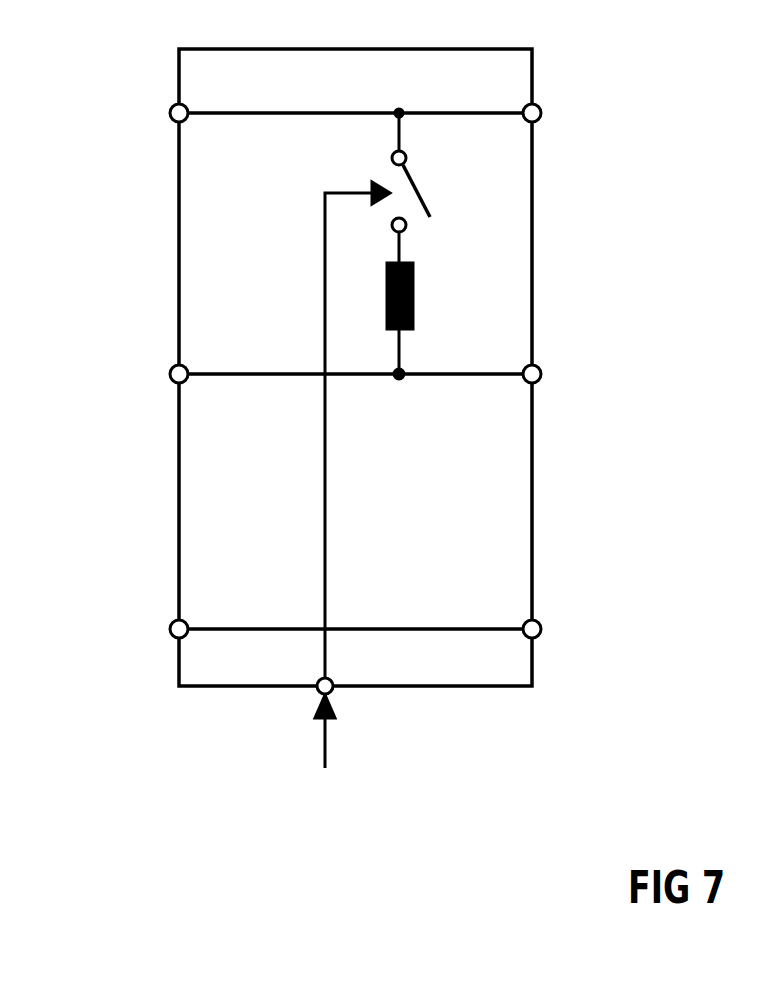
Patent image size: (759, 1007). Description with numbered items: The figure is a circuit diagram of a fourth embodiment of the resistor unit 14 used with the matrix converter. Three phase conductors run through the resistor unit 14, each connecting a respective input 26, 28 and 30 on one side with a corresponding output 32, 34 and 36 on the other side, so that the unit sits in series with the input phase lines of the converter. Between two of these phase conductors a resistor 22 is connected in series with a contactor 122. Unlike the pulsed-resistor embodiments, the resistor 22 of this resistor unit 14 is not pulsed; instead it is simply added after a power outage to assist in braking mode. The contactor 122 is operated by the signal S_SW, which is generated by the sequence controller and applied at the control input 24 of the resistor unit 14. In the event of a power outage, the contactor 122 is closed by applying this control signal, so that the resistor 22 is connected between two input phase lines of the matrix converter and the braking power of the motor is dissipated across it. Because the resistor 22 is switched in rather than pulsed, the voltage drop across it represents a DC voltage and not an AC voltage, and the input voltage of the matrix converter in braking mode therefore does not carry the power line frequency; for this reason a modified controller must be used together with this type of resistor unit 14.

The resistor unit 14 is at (533, 513).
The resistor 22 is at (413, 296).
The control input 24 is at (318, 692).
The input 26 is at (170, 113).
The input 28 is at (170, 374).
The input 30 is at (170, 629).
The output 32 is at (541, 113).
The output 34 is at (541, 374).
The output 36 is at (541, 629).
The contactor 122 is at (418, 190).